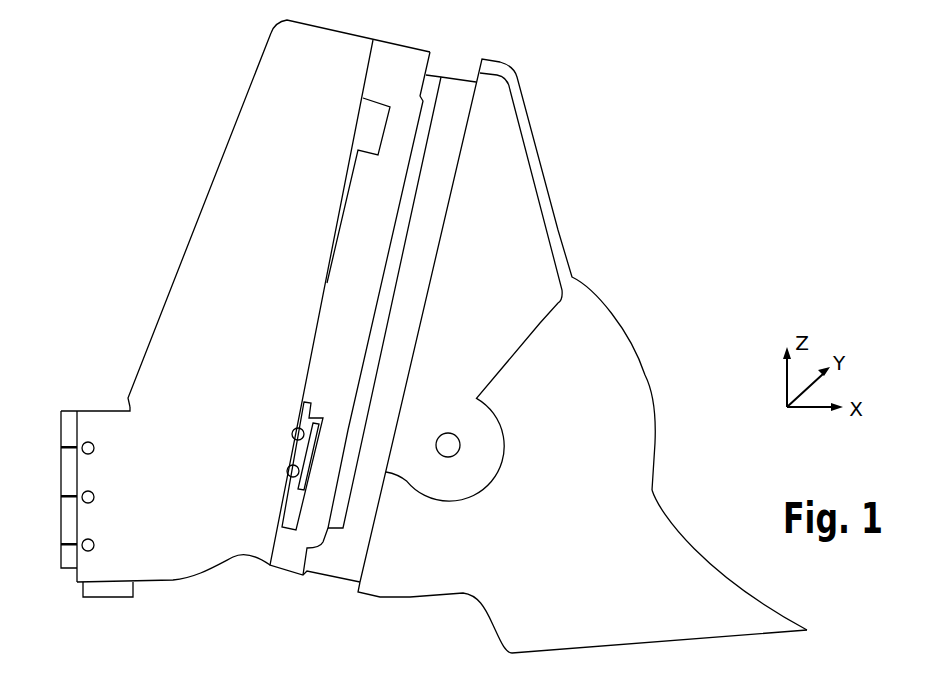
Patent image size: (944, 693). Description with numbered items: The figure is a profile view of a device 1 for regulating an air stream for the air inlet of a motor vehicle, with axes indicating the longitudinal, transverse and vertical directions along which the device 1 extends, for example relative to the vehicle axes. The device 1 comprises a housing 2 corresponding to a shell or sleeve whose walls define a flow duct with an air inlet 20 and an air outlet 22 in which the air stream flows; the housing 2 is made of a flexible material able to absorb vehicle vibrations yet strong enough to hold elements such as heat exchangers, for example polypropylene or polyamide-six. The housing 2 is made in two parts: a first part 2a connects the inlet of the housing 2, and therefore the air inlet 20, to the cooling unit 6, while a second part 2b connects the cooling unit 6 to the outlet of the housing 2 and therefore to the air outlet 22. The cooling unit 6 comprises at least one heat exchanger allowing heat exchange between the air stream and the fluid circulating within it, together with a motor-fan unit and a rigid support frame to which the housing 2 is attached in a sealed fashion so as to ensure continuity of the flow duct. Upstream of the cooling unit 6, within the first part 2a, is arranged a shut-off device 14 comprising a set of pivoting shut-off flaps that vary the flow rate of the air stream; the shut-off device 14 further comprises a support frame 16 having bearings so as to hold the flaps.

The device for regulating an air stream 1 is at (608, 165).
The housing 2 is at (568, 252).
The first part of the housing 2a is at (298, 108).
The second part of the housing 2b is at (488, 332).
The cooling unit 6 is at (365, 202).
The shut-off device 14 is at (73, 398).
The support frame 16 is at (67, 430).
The air inlet 20 is at (62, 478).
The air outlet 22 is at (652, 403).